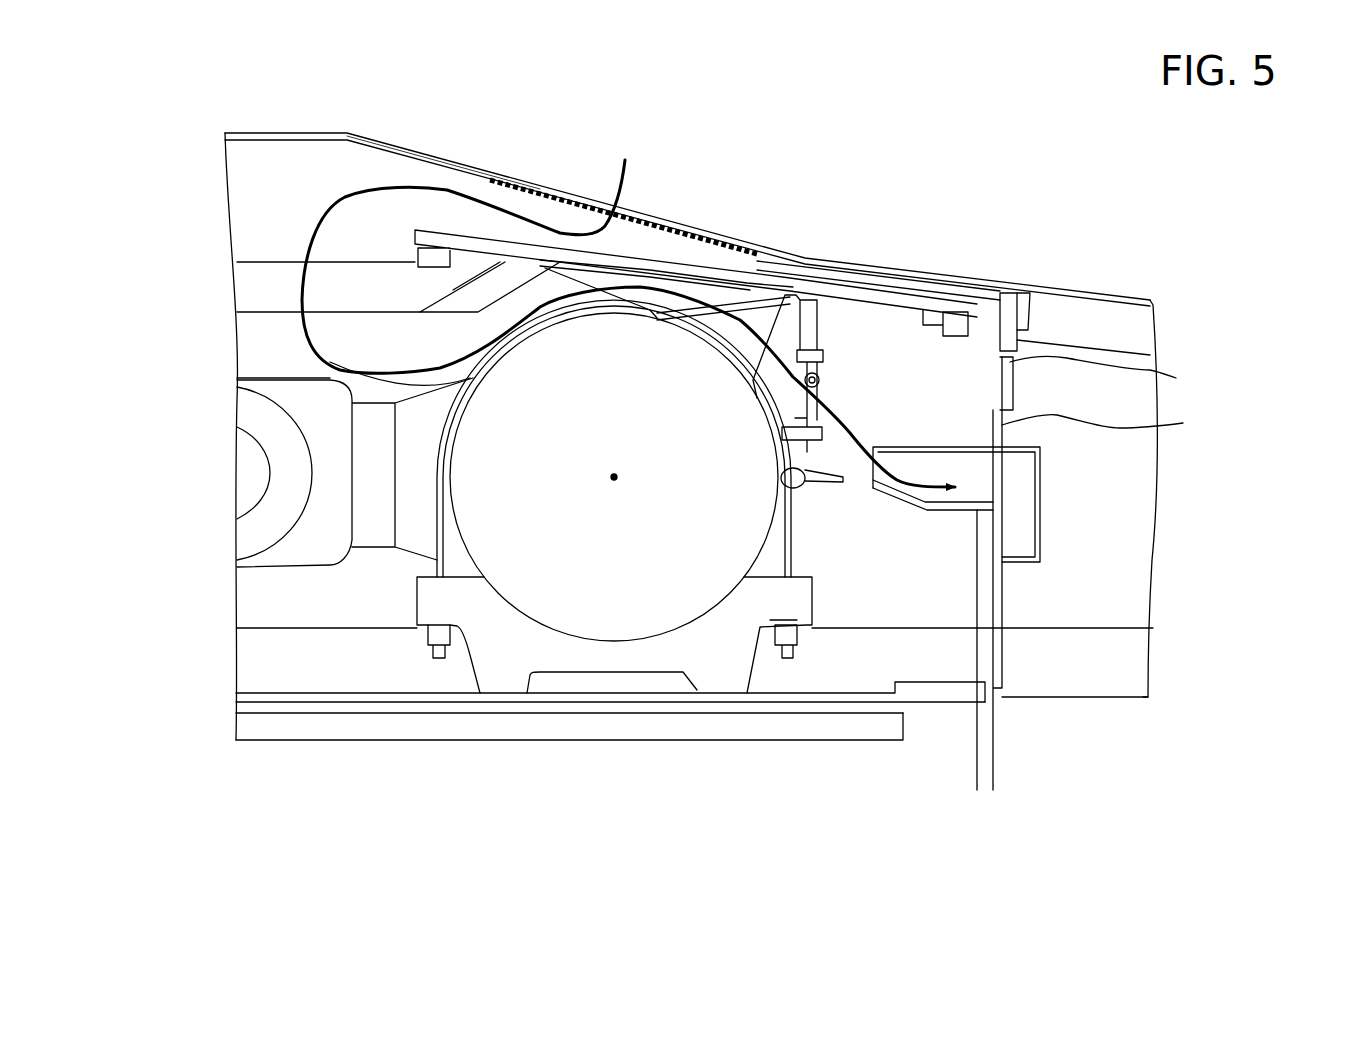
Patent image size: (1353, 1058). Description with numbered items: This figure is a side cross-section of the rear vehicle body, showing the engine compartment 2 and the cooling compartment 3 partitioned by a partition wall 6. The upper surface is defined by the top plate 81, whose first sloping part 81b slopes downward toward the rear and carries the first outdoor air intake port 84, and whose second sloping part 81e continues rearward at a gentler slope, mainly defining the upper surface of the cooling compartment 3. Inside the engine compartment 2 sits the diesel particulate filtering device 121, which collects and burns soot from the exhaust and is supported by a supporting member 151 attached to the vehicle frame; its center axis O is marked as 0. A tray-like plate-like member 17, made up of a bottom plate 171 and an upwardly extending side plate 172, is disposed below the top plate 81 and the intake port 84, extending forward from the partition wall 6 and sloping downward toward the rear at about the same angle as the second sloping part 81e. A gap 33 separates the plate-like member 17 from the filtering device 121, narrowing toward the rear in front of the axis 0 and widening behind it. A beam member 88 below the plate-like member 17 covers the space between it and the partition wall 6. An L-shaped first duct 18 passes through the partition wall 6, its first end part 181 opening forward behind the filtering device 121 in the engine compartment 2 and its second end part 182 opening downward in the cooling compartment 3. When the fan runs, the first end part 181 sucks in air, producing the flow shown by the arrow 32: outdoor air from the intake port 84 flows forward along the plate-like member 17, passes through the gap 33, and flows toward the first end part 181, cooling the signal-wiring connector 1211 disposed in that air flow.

The top plate 81 is at (807, 255).
The first sloping part 81b is at (385, 140).
The second sloping part 81e is at (1077, 289).
The first outdoor air intake port 84 is at (578, 197).
The plate-like member 17 is at (716, 272).
The side plate 172 is at (413, 230).
The bottom plate 171 is at (622, 268).
The gap 33 is at (690, 263).
The arrow 32 is at (853, 435).
The diesel particulate filtering device 121 is at (603, 587).
The center axis 0 is at (614, 477).
The connector 1211 is at (853, 435).
The engine compartment 2 is at (397, 682).
The supporting member 151 is at (327, 715).
The cooling compartment 3 is at (1124, 680).
The first duct 18 is at (1042, 605).
The first end part 181 is at (897, 503).
The second end part 182 is at (1040, 545).
The beam member 88 is at (1111, 377).
The partition wall 6 is at (1103, 421).